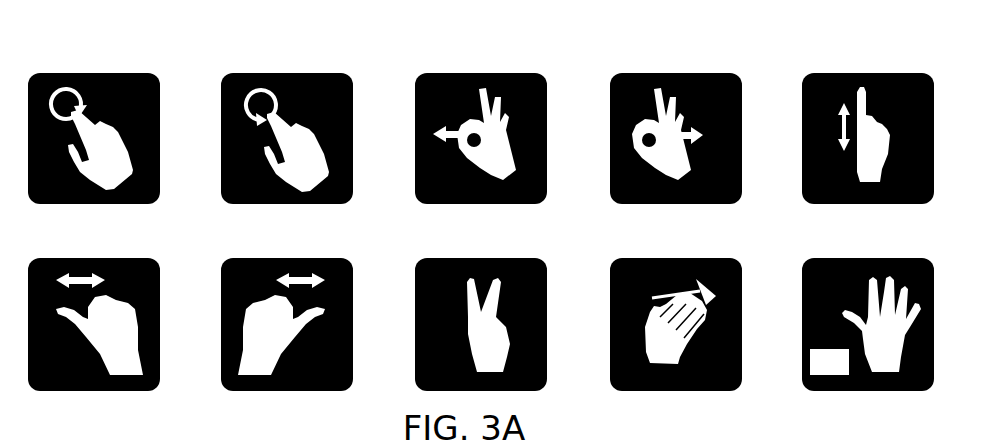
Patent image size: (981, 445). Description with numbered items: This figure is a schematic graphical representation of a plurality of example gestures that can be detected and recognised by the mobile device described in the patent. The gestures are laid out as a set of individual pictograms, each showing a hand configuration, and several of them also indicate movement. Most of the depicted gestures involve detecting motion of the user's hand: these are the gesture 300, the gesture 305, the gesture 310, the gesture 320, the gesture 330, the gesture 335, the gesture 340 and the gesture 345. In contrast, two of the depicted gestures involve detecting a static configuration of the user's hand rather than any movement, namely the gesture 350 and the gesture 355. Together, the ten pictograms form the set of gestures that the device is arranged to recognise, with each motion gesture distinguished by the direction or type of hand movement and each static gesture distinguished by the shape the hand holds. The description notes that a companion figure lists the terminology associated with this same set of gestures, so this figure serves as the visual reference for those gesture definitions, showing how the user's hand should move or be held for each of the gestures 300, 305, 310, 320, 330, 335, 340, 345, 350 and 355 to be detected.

The gesture 300 is at (80, 65).
The gesture 305 is at (278, 65).
The gesture 310 is at (473, 65).
The gesture 320 is at (666, 65).
The gesture 330 is at (858, 65).
The gesture 335 is at (80, 250).
The gesture 340 is at (279, 250).
The gesture 350 is at (471, 250).
The gesture 345 is at (665, 250).
The gesture 355 is at (858, 250).